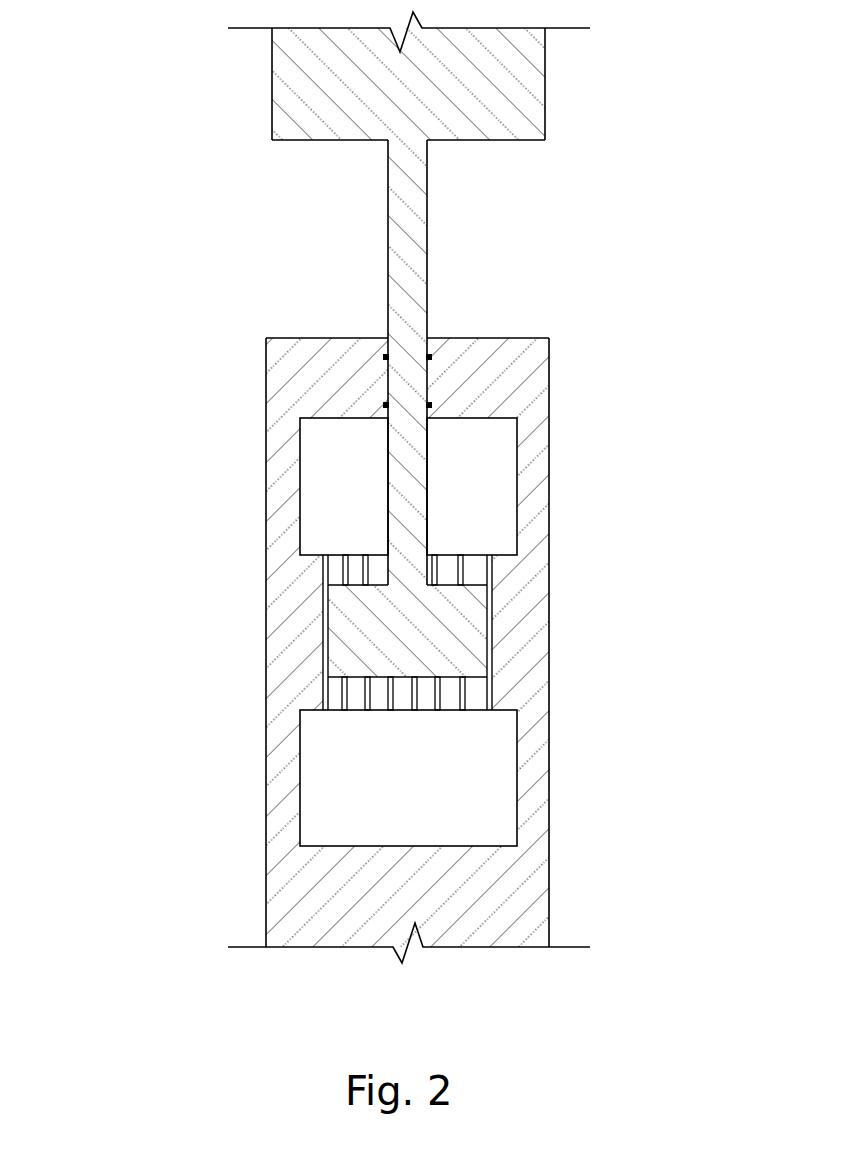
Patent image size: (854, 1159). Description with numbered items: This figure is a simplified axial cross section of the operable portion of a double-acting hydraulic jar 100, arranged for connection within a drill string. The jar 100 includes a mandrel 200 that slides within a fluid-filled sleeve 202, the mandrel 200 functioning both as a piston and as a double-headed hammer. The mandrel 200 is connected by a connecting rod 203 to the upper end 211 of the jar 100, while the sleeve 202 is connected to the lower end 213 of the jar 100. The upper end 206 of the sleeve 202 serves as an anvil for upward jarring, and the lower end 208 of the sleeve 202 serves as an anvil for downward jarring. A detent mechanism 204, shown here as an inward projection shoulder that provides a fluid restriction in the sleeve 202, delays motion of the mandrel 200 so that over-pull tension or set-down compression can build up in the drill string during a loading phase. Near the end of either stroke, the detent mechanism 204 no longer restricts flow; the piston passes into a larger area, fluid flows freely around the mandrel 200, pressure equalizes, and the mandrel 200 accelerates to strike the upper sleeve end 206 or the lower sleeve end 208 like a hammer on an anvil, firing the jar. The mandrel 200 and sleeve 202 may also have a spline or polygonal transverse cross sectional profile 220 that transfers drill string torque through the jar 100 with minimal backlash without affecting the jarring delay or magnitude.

The double-acting hydraulic jar 100 is at (122, 162).
The upper end of jar 211 is at (545, 70).
The connecting rod 203 is at (427, 240).
The sleeve 202 is at (266, 813).
The lower end of jar 213 is at (549, 938).
The upper end of sleeve 206 is at (485, 418).
The mandrel 200 is at (445, 583).
The detent mechanism 204 is at (478, 702).
The spline or polygonal transverse cross sectional profile 220 is at (465, 693).
The lower end of sleeve 208 is at (482, 845).